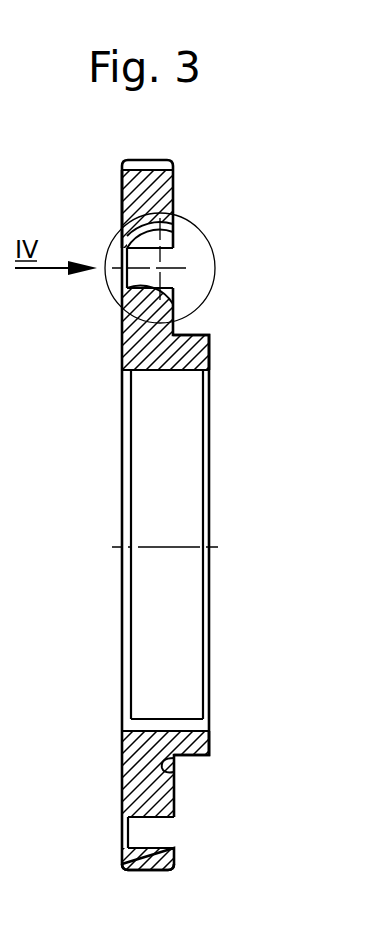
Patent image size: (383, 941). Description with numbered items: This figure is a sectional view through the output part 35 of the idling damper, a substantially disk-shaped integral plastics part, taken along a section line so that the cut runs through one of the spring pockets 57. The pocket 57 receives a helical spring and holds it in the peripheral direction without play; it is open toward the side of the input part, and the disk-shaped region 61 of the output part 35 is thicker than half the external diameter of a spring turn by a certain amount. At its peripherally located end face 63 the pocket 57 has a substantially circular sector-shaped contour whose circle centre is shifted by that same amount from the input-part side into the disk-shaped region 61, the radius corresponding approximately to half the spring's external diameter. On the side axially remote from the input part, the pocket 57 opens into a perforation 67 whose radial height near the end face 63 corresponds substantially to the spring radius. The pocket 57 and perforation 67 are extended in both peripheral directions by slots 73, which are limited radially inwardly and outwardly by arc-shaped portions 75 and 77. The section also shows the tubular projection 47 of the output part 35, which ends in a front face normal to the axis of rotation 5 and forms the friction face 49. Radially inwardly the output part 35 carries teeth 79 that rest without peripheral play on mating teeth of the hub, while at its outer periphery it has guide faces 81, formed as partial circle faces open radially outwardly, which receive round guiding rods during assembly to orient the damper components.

The axis of rotation 5 is at (215, 545).
The output part 35 is at (178, 198).
The tubular projection 47 is at (204, 753).
The friction face 49 is at (212, 358).
The pocket 57 is at (176, 258).
The disk-shaped region 61 is at (127, 182).
The end face 63 is at (170, 238).
The perforation 67 is at (133, 279).
The slot 73 is at (163, 830).
The arc-shaped portion 75 is at (130, 820).
The arc-shaped portion 77 is at (142, 845).
The teeth 79 is at (183, 727).
The guide face 81 is at (143, 173).